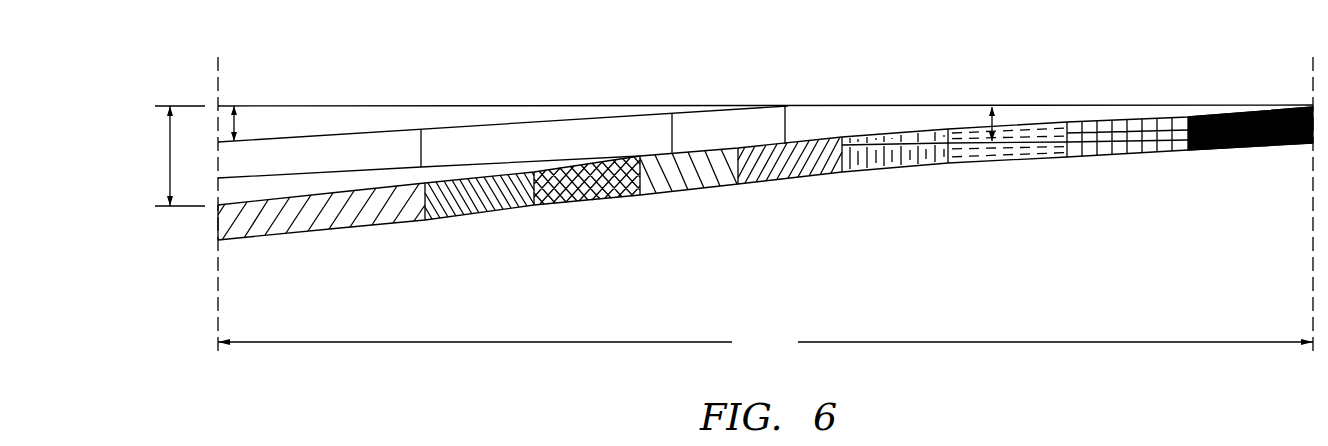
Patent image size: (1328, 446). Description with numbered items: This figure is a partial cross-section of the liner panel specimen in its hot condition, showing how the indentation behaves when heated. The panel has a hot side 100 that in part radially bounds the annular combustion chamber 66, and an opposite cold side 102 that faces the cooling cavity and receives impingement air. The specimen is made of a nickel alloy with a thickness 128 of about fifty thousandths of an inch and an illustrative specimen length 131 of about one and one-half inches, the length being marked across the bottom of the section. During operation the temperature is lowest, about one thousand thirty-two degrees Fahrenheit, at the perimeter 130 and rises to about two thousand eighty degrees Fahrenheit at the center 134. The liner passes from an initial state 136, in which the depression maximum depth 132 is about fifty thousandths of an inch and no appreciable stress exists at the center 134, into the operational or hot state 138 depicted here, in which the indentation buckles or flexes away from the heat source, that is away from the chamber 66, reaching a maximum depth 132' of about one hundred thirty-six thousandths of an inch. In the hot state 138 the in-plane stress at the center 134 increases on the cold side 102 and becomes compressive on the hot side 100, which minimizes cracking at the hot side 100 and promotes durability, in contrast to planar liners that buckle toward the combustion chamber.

The annular combustion chamber 66 is at (602, 82).
The hot side 100 is at (1152, 117).
The cold side 102 is at (1158, 152).
The thickness 128 is at (993, 121).
The perimeter 130 is at (1313, 238).
The specimen length 131 is at (765, 344).
The depression maximum depth 132 is at (278, 102).
The maximum depth 132' is at (135, 156).
The center 134 is at (218, 270).
The initial state 136 is at (813, 98).
The hot state 138 is at (688, 205).